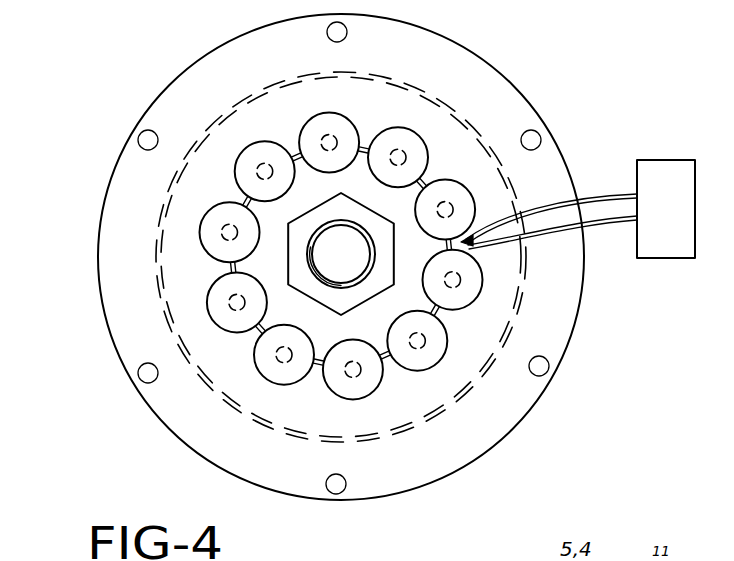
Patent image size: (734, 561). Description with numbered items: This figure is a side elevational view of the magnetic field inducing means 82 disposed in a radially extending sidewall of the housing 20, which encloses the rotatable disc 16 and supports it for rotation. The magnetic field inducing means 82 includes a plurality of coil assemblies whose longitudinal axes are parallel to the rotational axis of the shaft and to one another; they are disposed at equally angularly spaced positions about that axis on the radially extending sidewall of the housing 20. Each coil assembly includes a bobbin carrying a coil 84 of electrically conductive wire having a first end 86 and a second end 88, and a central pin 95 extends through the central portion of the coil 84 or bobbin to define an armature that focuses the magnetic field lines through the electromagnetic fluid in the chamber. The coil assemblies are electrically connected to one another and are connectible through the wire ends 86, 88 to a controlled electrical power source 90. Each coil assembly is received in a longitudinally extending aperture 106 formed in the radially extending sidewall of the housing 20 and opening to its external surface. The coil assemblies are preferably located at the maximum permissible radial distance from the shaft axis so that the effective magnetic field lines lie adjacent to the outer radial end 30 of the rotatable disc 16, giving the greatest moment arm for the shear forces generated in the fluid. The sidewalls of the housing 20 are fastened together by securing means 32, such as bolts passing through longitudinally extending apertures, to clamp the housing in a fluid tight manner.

The rotatable disc 16 is at (173, 262).
The housing 20 is at (560, 352).
The outer radial end 30 is at (177, 316).
The securing means 32 is at (546, 373).
The magnetic field inducing means 82 is at (424, 134).
The coil 84 is at (243, 148).
The first end 86 is at (593, 192).
The second end 88 is at (607, 222).
The controlled electrical power source 90 is at (682, 258).
The central pin 95 is at (272, 357).
The longitudinally extending aperture 106 is at (205, 212).